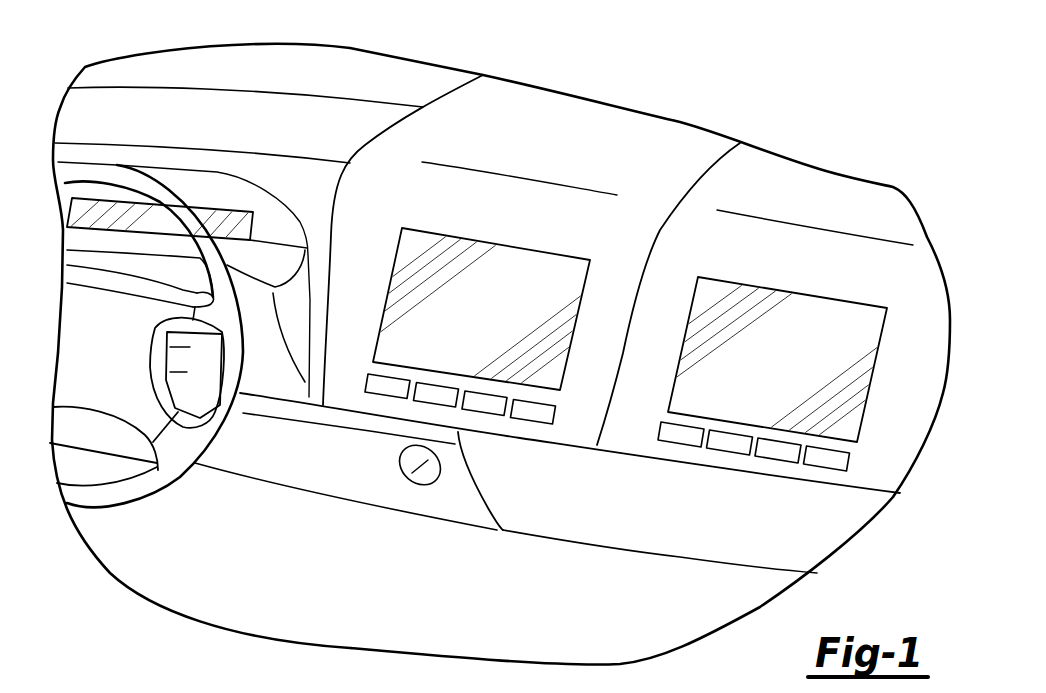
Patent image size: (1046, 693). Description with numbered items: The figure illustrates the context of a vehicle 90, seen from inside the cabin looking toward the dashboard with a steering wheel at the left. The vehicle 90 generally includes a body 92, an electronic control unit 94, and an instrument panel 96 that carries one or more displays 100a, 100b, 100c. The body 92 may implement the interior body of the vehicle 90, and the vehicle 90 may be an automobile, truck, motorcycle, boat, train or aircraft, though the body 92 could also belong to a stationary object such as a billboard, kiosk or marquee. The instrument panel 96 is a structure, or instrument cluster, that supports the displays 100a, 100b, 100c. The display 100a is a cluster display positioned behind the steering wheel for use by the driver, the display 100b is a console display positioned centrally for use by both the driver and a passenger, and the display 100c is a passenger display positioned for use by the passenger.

The vehicle 90 is at (647, 72).
The body 92 is at (367, 52).
The electronic control unit 94 is at (293, 490).
The instrument panel 96 is at (803, 185).
The display 100a is at (207, 203).
The display 100b is at (510, 246).
The display 100c is at (807, 295).